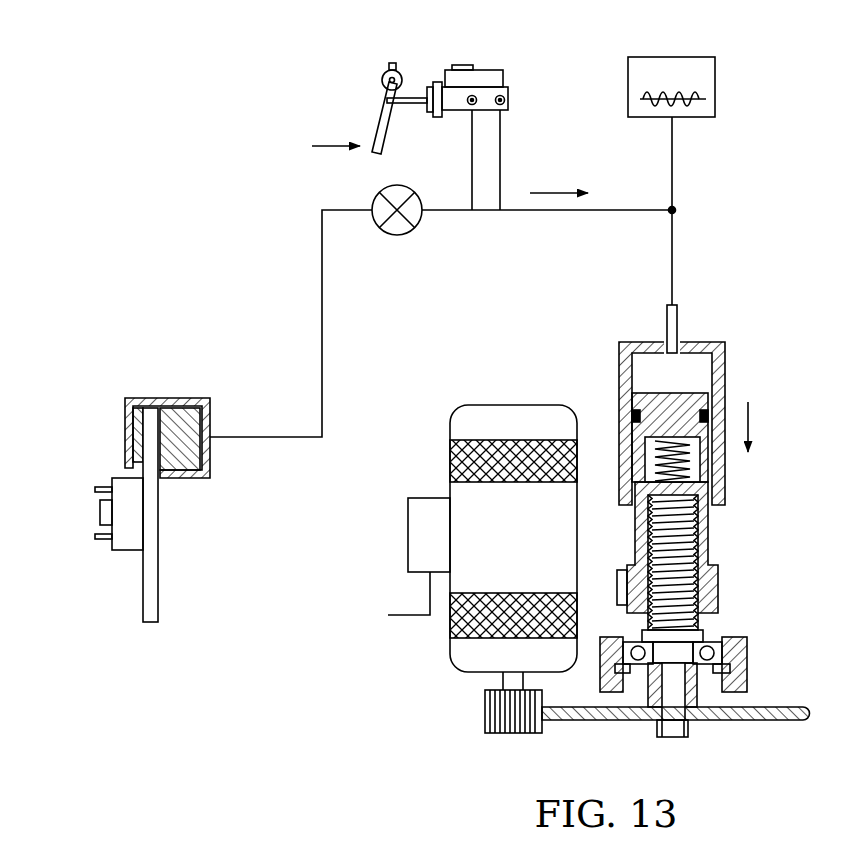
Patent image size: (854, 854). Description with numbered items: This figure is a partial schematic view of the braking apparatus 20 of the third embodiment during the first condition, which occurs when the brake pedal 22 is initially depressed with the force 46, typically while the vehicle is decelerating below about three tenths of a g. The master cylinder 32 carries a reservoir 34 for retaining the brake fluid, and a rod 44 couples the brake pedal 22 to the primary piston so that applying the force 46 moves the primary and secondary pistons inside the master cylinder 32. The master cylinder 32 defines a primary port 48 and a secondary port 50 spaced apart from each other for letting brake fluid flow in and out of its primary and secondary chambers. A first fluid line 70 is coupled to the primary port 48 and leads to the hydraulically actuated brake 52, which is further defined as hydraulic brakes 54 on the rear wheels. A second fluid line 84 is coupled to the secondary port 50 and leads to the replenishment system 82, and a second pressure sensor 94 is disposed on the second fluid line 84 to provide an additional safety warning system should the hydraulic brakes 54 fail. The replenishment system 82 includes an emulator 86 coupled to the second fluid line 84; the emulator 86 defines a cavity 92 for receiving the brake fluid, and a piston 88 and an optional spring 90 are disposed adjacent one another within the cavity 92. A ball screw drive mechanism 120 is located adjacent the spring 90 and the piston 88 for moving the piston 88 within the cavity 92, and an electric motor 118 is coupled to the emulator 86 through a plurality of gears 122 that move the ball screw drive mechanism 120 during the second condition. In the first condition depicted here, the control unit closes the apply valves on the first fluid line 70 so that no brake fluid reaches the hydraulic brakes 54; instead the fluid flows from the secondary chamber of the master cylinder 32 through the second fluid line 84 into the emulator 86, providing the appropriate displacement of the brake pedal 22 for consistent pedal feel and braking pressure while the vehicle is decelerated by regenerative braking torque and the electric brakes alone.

The braking apparatus 20 is at (188, 143).
The brake pedal 22 is at (383, 118).
The master cylinder 32 is at (452, 106).
The reservoir 34 is at (497, 75).
The rod 44 is at (412, 97).
The force 46 is at (325, 146).
The primary port 48 is at (474, 104).
The secondary port 50 is at (505, 99).
The hydraulically actuated brake 52 is at (101, 398).
The hydraulic brake 54 is at (195, 480).
The first fluid line 70 is at (322, 305).
The replenishment system 82 is at (545, 330).
The second fluid line 84 is at (570, 224).
The emulator 86 is at (726, 359).
The piston 88 is at (645, 398).
The spring 90 is at (687, 454).
The cavity 92 is at (700, 371).
The second pressure sensor 94 is at (705, 118).
The electric motor 118 is at (468, 418).
The ball screw drive mechanism 120 is at (713, 577).
The gears 122 is at (524, 733).